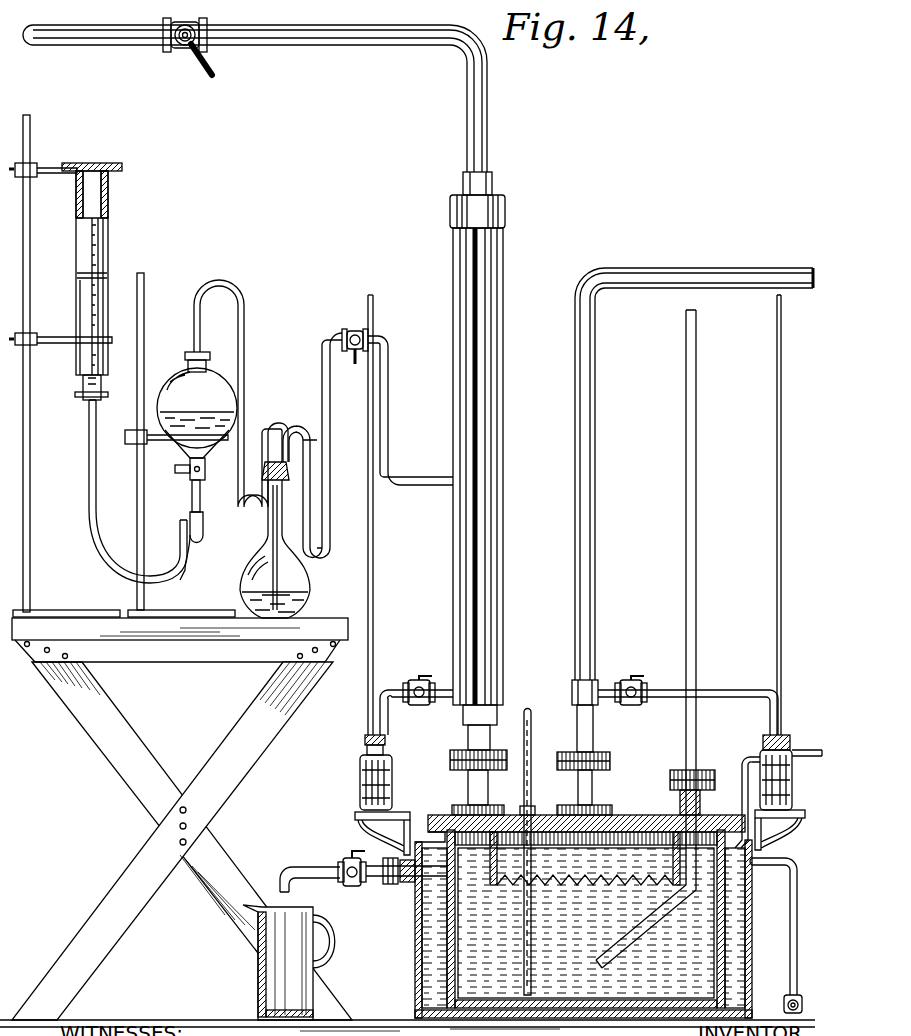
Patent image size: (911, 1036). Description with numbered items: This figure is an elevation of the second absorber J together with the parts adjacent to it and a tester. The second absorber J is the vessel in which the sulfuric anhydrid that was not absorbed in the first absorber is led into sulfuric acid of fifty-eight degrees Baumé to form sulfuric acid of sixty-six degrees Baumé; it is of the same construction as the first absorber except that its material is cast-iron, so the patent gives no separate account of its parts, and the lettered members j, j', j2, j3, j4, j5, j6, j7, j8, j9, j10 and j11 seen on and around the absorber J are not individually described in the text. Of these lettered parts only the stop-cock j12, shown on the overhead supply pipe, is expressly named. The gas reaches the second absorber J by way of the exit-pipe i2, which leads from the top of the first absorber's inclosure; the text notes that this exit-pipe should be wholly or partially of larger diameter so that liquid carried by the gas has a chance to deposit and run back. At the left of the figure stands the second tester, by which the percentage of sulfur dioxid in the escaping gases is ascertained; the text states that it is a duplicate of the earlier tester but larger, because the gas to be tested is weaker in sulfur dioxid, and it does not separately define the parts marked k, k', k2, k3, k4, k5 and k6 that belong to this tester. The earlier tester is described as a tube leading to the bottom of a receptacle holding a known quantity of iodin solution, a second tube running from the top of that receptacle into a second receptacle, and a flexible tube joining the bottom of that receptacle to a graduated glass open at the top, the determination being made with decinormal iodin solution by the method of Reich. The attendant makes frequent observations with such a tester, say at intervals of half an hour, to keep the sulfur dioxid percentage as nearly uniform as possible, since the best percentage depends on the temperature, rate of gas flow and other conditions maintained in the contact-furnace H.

The stop-cock j12 is at (178, 46).
The column / cylinder j10 is at (490, 461).
The flange coupling j2 is at (489, 785).
The valve k6 is at (352, 331).
The contact-furnace H is at (122, 366).
The burette k5 is at (108, 260).
The tube k4 is at (96, 548).
The separatory flask k3 is at (168, 385).
The tube k2 is at (244, 385).
The tube k is at (312, 445).
The flask k' is at (269, 540).
The bottle j9 is at (393, 775).
The exit-pipe i2 is at (595, 598).
The tube j3 is at (696, 662).
The tube j7 is at (796, 748).
The bottle j8 is at (792, 786).
The outer jacket j is at (565, 929).
The jacket space j5 is at (418, 925).
The second absorber J is at (580, 911).
The rod / thermometer j11 is at (531, 748).
The pipe j4 is at (335, 862).
The inlet pipe j' is at (392, 880).
The drain pipe j6 is at (797, 936).